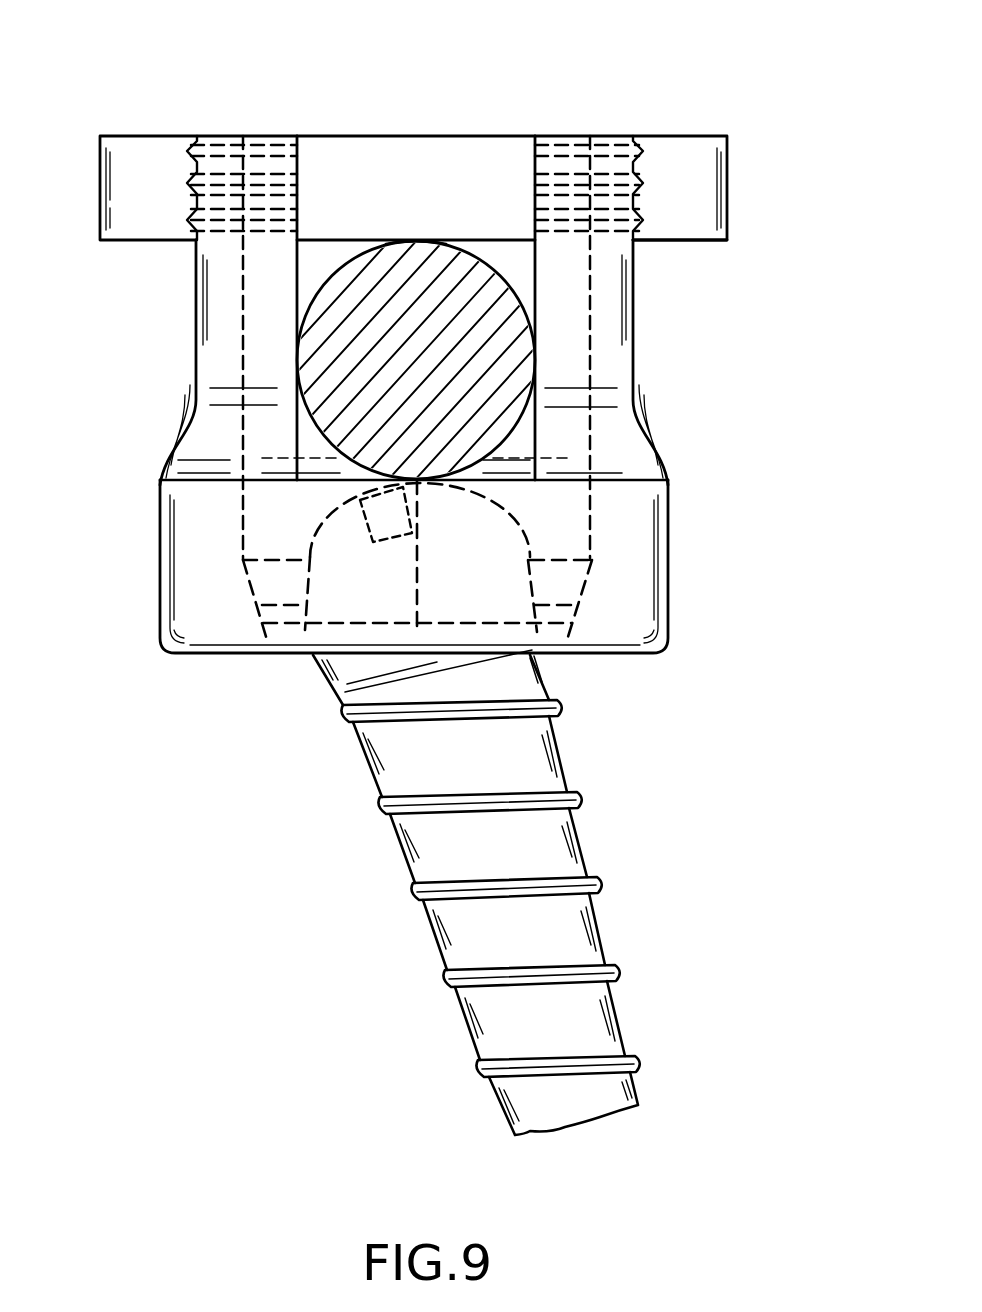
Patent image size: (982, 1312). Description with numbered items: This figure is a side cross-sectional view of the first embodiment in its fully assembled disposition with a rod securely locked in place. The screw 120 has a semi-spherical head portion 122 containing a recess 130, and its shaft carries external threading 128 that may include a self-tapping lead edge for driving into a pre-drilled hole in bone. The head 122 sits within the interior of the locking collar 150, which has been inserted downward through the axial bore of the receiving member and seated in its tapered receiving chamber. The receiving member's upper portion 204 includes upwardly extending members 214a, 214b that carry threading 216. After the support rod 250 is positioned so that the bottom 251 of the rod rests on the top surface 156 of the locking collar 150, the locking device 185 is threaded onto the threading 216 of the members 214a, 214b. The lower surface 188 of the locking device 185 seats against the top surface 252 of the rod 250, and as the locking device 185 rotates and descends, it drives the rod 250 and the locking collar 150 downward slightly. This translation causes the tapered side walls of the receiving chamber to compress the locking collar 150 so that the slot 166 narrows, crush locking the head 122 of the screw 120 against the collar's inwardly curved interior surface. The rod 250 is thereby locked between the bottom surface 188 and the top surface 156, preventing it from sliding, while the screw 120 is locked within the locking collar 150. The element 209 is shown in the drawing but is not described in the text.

The screw 120 is at (553, 840).
The head portion 122 is at (385, 597).
The external threading 128 is at (615, 977).
The recess 130 is at (373, 520).
The locking collar 150 is at (547, 503).
The top surface 156 is at (417, 480).
The slot 166 is at (420, 570).
The locking device 185 is at (697, 150).
The lower surface 188 is at (687, 243).
The upper portion 204 is at (650, 265).
The head recess wall 209 is at (580, 588).
The upwardly extending member 214a is at (570, 148).
The upwardly extending member 214b is at (262, 148).
The threading 216 is at (640, 182).
The support rod 250 is at (500, 352).
The bottom of the rod 251 is at (413, 480).
The top surface of the rod 252 is at (418, 246).